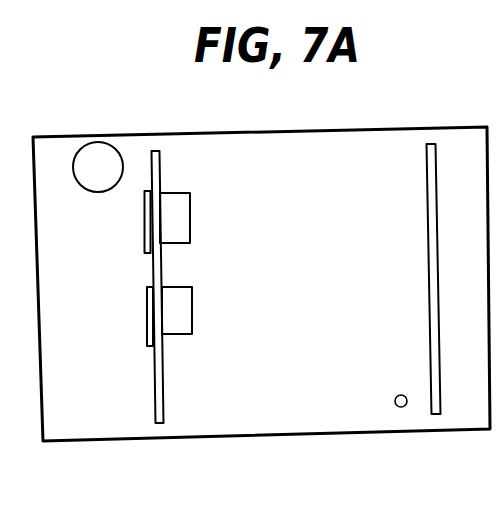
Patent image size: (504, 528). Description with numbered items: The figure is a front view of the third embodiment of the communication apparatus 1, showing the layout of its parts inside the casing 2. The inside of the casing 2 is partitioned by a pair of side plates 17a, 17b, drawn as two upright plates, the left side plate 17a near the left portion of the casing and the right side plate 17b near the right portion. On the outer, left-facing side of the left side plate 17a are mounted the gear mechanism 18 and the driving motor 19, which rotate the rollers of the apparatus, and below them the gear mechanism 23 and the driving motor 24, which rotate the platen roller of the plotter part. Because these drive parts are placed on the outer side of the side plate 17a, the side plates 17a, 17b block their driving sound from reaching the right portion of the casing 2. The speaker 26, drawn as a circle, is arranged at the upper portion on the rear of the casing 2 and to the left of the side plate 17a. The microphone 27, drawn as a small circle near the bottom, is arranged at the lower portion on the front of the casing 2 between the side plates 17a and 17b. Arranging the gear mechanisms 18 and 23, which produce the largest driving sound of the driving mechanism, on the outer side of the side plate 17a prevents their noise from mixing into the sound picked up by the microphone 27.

The communication apparatus 1 is at (400, 120).
The casing 2 is at (164, 133).
The side plate 17a is at (165, 388).
The side plate 17b is at (429, 329).
The gear mechanism 18 is at (145, 331).
The driving motor 19 is at (192, 307).
The gear mechanism 23 is at (143, 234).
The driving motor 24 is at (183, 224).
The speaker 26 is at (100, 188).
The microphone 27 is at (406, 407).